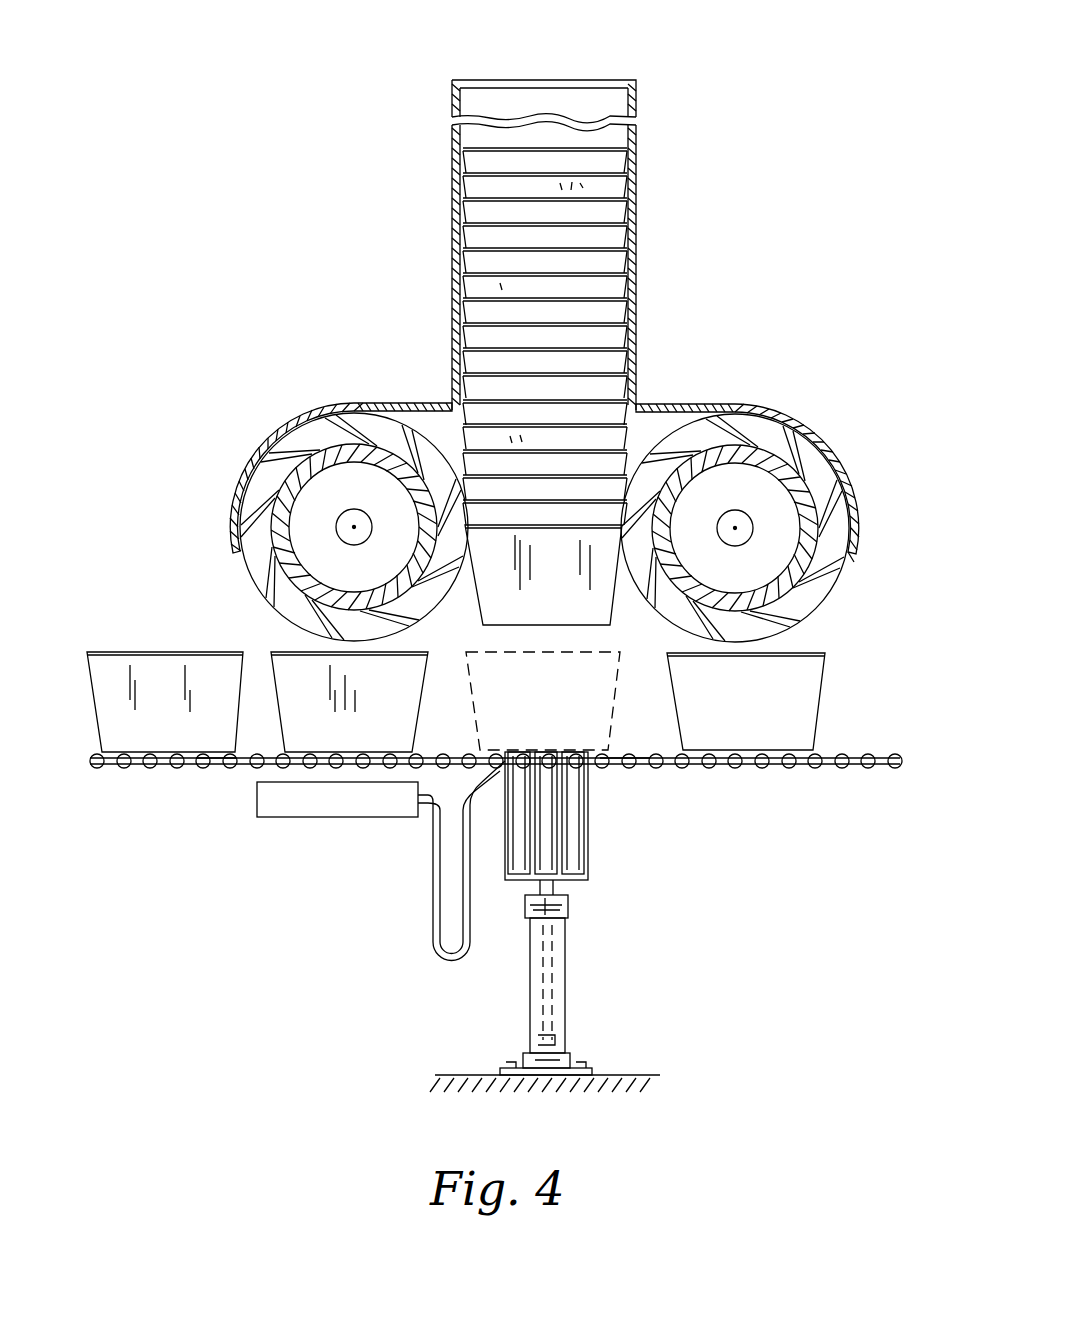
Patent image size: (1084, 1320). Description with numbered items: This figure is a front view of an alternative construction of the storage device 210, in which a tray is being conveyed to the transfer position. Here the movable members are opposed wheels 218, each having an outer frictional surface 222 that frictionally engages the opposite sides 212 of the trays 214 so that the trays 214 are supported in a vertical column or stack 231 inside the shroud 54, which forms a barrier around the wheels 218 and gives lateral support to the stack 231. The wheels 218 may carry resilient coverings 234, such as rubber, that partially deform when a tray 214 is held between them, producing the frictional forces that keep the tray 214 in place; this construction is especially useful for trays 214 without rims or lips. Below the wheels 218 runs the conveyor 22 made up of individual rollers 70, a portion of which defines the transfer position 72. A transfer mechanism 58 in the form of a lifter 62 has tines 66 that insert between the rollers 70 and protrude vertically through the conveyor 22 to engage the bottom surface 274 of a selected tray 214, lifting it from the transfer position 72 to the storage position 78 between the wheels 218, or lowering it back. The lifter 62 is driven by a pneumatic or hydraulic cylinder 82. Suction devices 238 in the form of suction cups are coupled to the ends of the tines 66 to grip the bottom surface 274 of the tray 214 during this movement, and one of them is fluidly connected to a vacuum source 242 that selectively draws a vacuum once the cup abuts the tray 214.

The storage device 210 is at (326, 143).
The vertical column or stack 231 is at (588, 50).
The shroud 54 is at (636, 205).
The resilient covering 234 is at (330, 428).
The wheel 218 is at (318, 543).
The outer frictional surface 222 is at (243, 565).
The storage position 78 is at (630, 598).
The tray 214 is at (108, 655).
The side of tray 212 is at (243, 682).
The conveyor 22 is at (867, 790).
The bottom surface of tray 274 is at (160, 768).
The roller 70 is at (200, 770).
The transfer position 72 is at (640, 748).
The vacuum source 242 is at (325, 817).
The lifter 62 is at (508, 885).
The transfer mechanism 58 is at (577, 913).
The tine 66 is at (590, 818).
The vacuum cups 238 is at (506, 758).
The pneumatic or hydraulic cylinder 82 is at (565, 990).